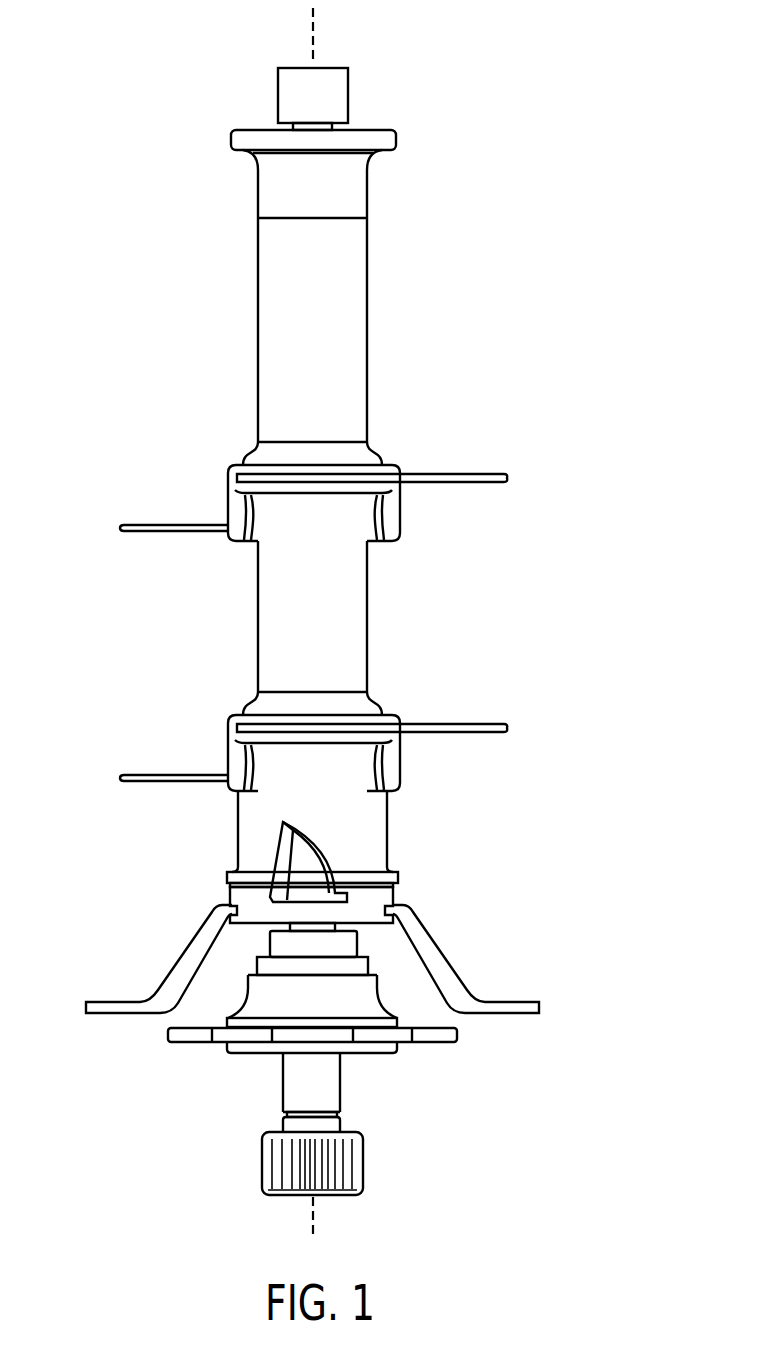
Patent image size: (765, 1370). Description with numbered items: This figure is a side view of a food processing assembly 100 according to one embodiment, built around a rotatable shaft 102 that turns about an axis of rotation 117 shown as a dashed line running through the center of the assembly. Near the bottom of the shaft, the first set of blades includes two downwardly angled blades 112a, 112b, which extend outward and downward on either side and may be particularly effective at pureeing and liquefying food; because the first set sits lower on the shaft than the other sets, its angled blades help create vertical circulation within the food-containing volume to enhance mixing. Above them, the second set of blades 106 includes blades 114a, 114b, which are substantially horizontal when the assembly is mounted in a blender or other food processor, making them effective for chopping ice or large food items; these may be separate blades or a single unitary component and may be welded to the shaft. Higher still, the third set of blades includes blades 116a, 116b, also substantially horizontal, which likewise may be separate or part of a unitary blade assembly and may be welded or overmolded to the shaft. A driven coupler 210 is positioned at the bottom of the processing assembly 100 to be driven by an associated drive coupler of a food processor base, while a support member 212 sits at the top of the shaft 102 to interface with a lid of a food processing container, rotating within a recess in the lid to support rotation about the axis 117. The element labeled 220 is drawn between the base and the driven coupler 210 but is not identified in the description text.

The processing assembly 100 is at (574, 60).
The rotatable shaft 102 is at (352, 183).
The second set of blades 106 is at (484, 587).
The downwardly angled blade 112a is at (173, 968).
The downwardly angled blade 112b is at (450, 963).
The blade 114a is at (163, 775).
The blade 114b is at (458, 725).
The blade 116a is at (163, 525).
The blade 116b is at (458, 475).
The axis of rotation 117 is at (318, 27).
The driven coupler 210 is at (288, 1160).
The support member 212 is at (290, 98).
The shaft 220 is at (333, 1085).